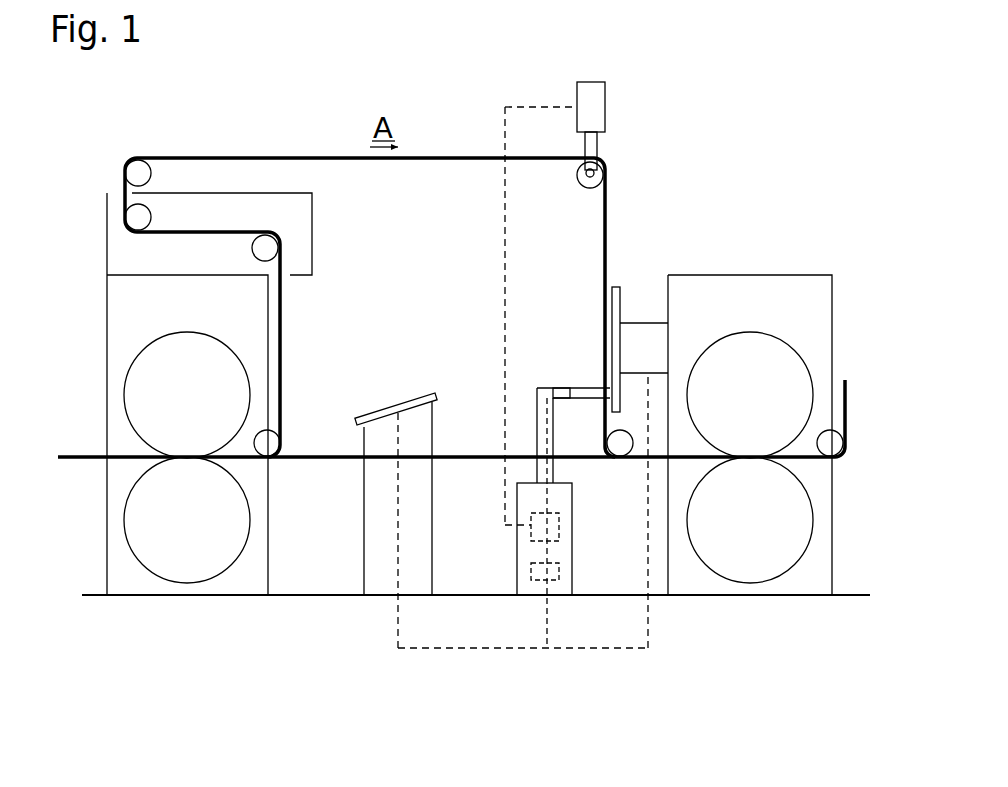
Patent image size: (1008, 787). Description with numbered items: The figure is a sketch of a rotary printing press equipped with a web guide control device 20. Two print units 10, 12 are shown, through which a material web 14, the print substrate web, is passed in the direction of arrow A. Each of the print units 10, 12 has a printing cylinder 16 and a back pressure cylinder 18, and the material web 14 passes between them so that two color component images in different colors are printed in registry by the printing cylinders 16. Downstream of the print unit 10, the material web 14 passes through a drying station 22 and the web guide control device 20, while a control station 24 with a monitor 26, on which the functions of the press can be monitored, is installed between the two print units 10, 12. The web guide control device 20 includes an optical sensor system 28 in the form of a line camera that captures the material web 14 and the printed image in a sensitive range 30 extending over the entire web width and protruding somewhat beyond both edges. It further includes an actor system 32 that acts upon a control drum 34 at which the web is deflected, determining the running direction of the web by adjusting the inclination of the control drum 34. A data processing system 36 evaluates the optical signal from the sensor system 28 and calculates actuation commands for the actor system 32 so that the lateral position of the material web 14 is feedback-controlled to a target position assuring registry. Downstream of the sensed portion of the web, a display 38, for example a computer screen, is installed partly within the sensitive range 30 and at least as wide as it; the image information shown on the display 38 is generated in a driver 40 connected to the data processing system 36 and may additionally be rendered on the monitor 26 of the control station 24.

The print unit 10 is at (137, 603).
The print unit 12 is at (789, 608).
The material web 14 is at (440, 157).
The printing cylinder 16 is at (183, 573).
The back pressure cylinder 18 is at (185, 350).
The web guide control device 20 is at (485, 298).
The drying station 22 is at (215, 192).
The control station 24 is at (372, 520).
The monitor 26 is at (380, 413).
The optical sensor system 28 is at (550, 395).
The sensitive range 30 is at (586, 388).
The actor system 32 is at (603, 107).
The control drum 34 is at (603, 175).
The data processing system 36 is at (551, 528).
The display 38 is at (622, 298).
The driver 40 is at (537, 578).